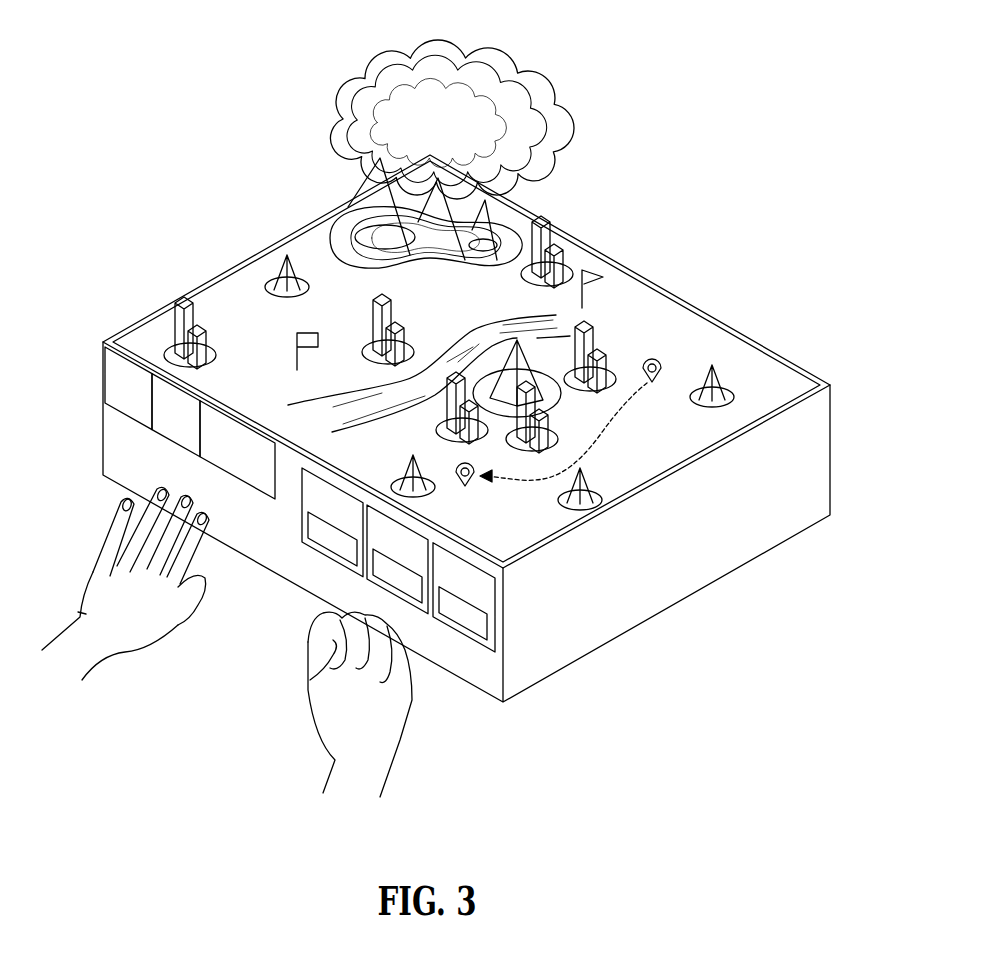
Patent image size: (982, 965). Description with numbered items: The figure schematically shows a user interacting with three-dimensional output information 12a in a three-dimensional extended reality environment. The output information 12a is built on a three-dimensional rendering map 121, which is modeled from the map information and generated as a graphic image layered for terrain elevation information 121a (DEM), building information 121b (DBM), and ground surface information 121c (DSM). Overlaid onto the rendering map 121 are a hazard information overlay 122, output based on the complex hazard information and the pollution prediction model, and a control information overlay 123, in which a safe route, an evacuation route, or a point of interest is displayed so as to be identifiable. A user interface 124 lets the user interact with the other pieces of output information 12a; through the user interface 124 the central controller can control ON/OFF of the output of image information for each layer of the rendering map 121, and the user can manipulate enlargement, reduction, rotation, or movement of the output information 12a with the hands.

The 3D output information 12a is at (549, 58).
The 3D rendering map 121 is at (742, 356).
The terrain elevation information 121a is at (333, 231).
The building information 121b is at (178, 300).
The ground surface information 121c is at (286, 256).
The hazard information overlay 122 is at (410, 62).
The control information overlay 123 is at (295, 335).
The user interface 124 is at (123, 413).